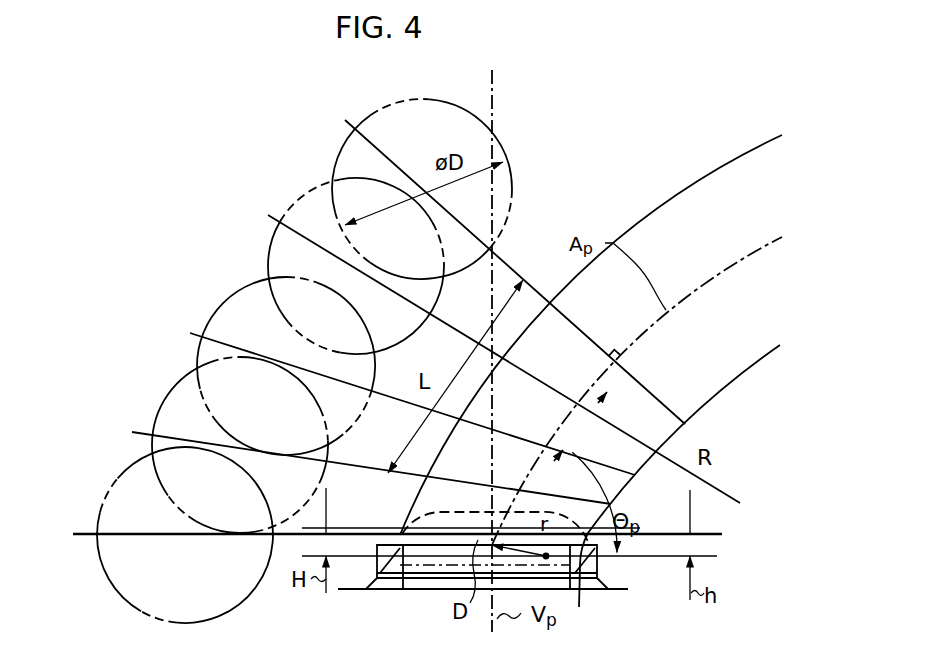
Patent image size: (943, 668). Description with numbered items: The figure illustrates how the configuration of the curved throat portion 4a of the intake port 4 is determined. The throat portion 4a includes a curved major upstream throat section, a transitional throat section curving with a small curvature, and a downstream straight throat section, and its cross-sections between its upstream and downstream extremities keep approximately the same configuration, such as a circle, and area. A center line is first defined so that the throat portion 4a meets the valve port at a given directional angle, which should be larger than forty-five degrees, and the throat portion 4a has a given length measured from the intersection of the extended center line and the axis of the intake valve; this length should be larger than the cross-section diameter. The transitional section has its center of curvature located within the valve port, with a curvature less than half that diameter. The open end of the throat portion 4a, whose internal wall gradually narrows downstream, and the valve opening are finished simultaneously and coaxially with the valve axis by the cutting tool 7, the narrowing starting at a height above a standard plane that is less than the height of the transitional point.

The intake port 4 is at (430, 552).
The throat portion 4a is at (541, 421).
The cutting tool 7 is at (477, 512).